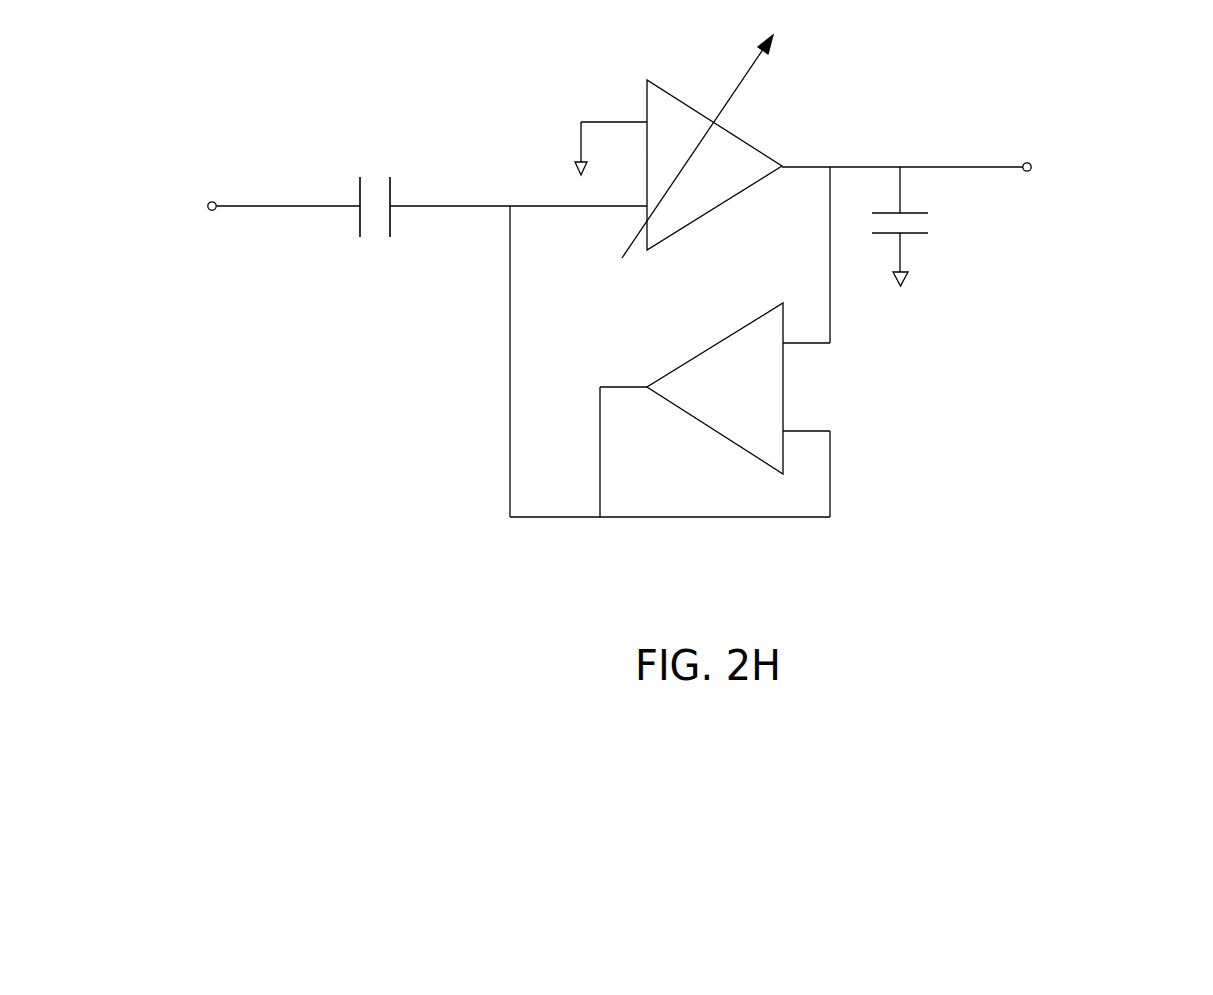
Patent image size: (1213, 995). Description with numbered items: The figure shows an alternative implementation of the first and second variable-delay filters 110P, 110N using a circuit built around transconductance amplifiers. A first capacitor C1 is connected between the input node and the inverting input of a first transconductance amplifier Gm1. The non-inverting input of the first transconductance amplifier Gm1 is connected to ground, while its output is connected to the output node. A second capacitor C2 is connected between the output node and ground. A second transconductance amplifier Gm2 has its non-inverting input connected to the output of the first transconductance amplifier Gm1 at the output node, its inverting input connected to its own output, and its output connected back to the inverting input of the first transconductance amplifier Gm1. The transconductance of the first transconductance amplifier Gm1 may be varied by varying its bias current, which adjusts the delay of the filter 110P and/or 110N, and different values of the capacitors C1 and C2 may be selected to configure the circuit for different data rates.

The first variable-delay filter 110P is at (1131, 597).
The second variable-delay filter 110N is at (623, 276).
The first capacitor C1 is at (377, 185).
The second capacitor C2 is at (919, 226).
The first transconductance amplifier Gm1 is at (702, 146).
The second transconductance amplifier Gm2 is at (715, 388).